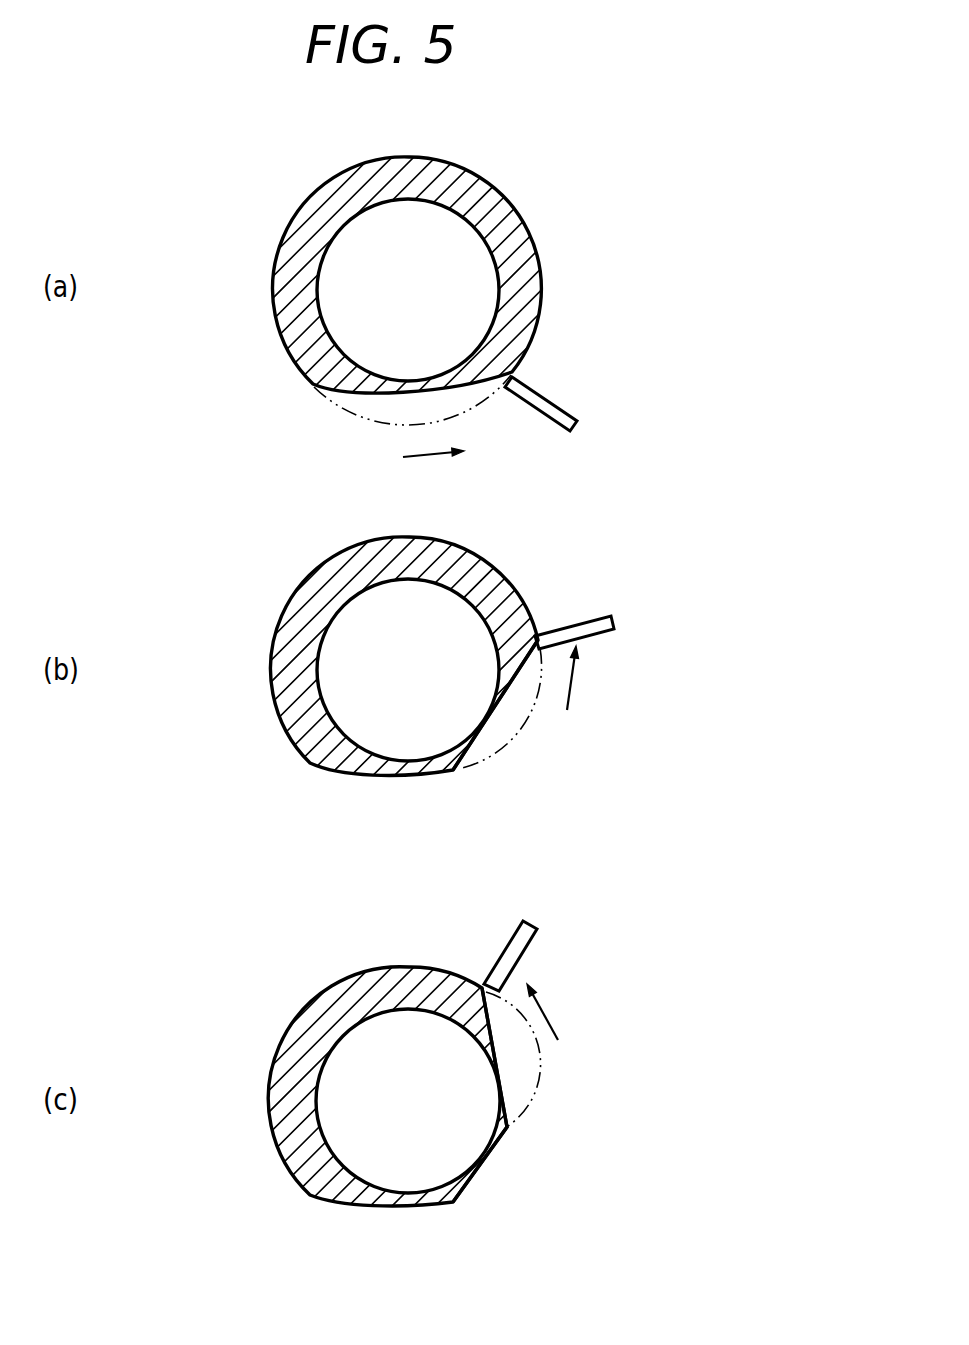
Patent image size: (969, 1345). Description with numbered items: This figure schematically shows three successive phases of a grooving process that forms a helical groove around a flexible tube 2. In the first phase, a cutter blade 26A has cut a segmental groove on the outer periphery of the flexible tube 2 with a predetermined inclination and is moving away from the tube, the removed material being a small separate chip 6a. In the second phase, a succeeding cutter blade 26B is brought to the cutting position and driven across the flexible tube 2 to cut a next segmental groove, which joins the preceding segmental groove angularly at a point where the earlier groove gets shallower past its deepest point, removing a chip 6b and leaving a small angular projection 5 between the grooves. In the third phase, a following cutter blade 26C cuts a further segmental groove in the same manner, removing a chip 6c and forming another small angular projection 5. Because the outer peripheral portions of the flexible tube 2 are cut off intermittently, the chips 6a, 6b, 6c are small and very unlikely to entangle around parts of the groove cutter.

The flexible tube 2 is at (297, 245).
The small angular projection 5 is at (457, 770).
The chip 6a is at (376, 407).
The chip 6b is at (520, 718).
The chip 6c is at (513, 1066).
The cutter blade 26A is at (547, 405).
The cutter blade 26B is at (615, 622).
The cutter blade 26C is at (520, 943).